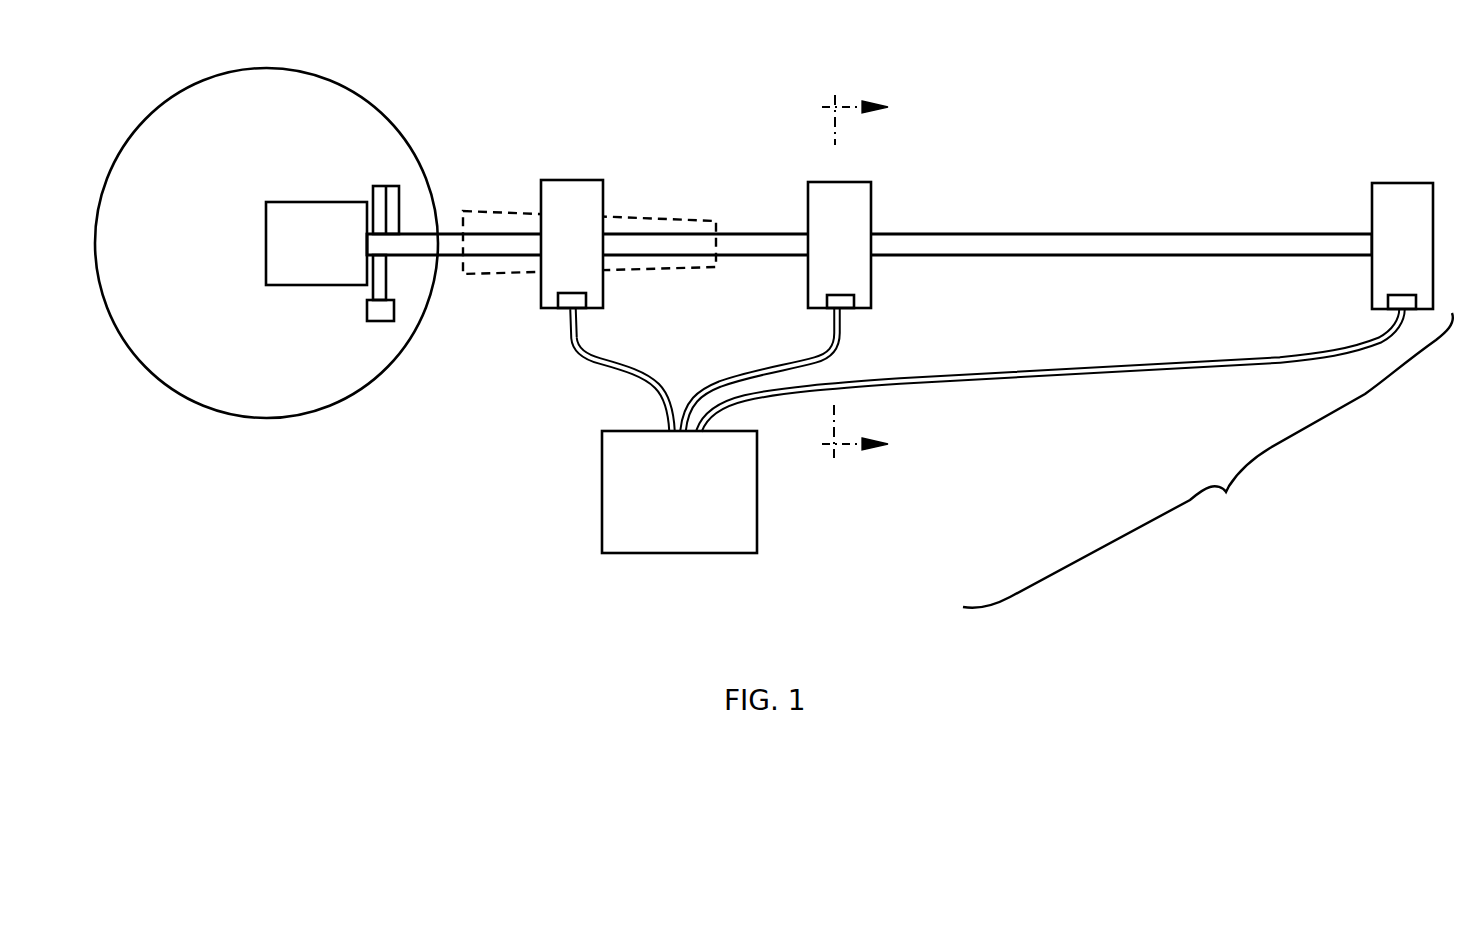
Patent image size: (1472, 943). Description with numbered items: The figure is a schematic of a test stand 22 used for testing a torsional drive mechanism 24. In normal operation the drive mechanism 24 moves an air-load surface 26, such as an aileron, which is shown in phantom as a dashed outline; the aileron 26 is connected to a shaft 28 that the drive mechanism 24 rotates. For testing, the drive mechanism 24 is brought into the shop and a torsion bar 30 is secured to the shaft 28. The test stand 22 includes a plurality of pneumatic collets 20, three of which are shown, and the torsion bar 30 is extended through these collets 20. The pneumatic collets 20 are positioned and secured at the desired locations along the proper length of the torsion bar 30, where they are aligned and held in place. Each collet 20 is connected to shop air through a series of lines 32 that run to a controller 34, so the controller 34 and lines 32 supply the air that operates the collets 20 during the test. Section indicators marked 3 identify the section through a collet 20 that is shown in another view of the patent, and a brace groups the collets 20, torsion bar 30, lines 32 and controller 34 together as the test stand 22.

The pneumatic collet 20 is at (560, 180).
The test stand 22 is at (1208, 460).
The drive mechanism 24 is at (382, 186).
The air-load surface 26 is at (623, 218).
The shaft 28 is at (442, 255).
The torsion bar 30 is at (1003, 233).
The lines 32 is at (578, 355).
The controller 34 is at (602, 503).
The section line of FIG. 3 is at (866, 276).